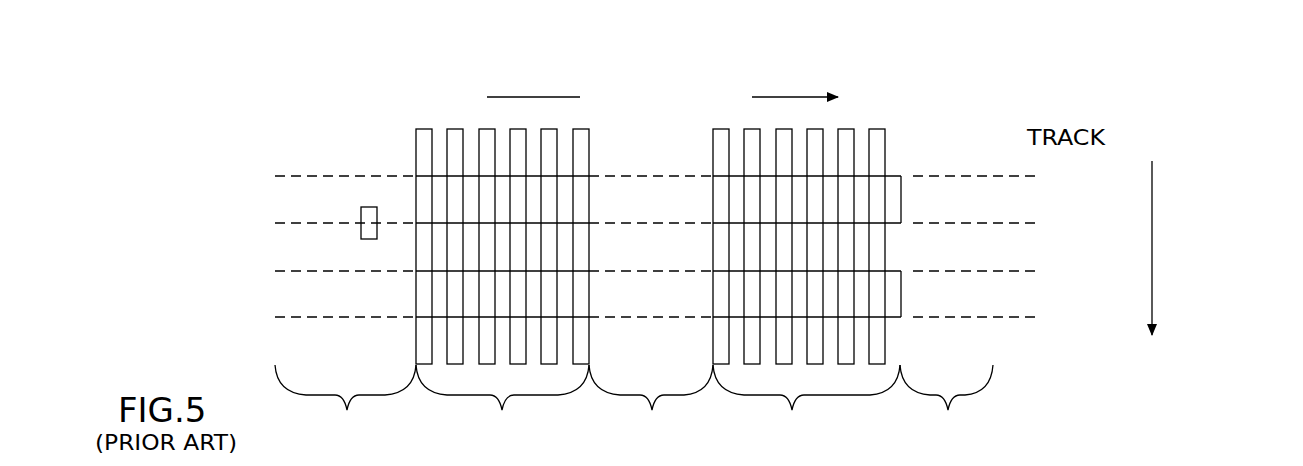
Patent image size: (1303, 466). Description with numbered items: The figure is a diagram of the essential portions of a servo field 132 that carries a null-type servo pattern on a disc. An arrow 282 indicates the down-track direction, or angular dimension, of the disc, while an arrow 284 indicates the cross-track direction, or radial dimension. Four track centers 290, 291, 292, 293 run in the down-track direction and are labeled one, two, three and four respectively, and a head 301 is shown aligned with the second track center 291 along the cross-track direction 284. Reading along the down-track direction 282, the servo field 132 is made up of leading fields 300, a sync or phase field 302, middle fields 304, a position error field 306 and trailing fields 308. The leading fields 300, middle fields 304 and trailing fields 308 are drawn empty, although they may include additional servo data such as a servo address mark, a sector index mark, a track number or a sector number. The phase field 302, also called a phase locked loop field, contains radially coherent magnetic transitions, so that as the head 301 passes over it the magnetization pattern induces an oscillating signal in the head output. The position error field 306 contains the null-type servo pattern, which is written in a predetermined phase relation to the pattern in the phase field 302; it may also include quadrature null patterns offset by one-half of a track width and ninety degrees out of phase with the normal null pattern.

The servo field 132 is at (887, 112).
The arrow indicating down-track direction 282 is at (790, 97).
The arrow indicating cross-track direction 284 is at (1152, 178).
The track center 290 is at (933, 176).
The track center 291 is at (937, 223).
The track center 292 is at (933, 271).
The track center 293 is at (933, 317).
The leading fields 300 is at (345, 403).
The head 301 is at (370, 238).
The phase field 302 is at (502, 285).
The middle fields 304 is at (651, 403).
The position error field 306 is at (806, 285).
The trailing fields 308 is at (946, 403).